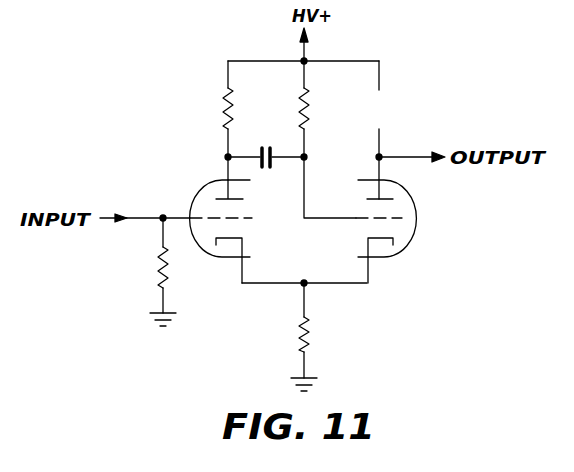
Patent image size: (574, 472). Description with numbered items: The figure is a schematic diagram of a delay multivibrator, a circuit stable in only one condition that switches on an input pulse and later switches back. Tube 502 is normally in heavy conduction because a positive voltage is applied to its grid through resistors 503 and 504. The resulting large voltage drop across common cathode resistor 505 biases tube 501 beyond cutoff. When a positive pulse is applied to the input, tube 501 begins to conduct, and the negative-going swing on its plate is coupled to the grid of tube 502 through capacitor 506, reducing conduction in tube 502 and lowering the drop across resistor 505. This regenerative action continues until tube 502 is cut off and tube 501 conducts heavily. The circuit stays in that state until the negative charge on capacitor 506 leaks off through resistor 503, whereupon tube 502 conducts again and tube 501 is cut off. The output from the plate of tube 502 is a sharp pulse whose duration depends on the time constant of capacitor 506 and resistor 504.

The tube 501 is at (236, 289).
The tube 502 is at (426, 287).
The resistor 503 is at (225, 106).
The resistor 504 is at (309, 110).
The common cathode resistor 505 is at (310, 336).
The capacitor 506 is at (271, 150).